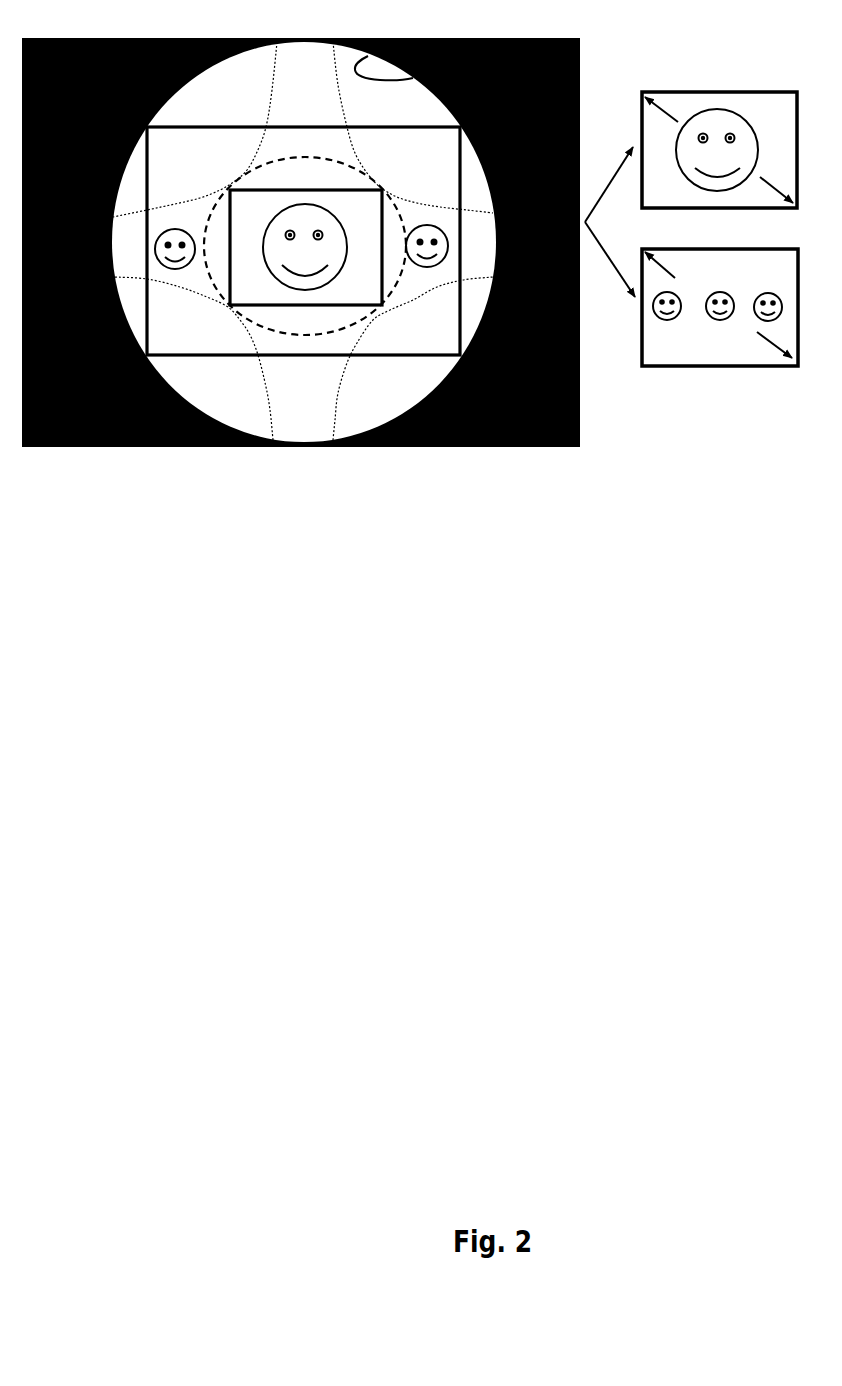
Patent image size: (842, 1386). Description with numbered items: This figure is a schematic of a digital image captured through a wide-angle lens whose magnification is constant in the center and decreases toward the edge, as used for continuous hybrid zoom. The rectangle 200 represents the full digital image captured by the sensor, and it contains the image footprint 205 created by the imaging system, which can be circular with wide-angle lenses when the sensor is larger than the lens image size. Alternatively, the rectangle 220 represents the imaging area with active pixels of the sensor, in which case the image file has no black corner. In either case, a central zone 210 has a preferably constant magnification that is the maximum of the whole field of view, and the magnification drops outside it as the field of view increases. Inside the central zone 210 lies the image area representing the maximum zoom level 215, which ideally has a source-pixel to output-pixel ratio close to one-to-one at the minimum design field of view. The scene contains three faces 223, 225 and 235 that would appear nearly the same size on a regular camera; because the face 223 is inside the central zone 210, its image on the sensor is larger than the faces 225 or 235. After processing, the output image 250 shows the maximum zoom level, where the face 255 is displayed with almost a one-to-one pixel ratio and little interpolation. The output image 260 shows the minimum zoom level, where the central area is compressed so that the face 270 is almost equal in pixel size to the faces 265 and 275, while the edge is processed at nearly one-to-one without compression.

The full digital image 200 is at (301, 230).
The image footprint 205 is at (393, 38).
The central zone 210 is at (305, 235).
The image area representing the maximum zoom level 215 is at (306, 235).
The rectangle representing the imaging area with active pixels 220 is at (303, 230).
The face 223 is at (314, 245).
The face 225 is at (175, 238).
The face 235 is at (427, 237).
The output image 250 is at (719, 138).
The face 255 is at (731, 150).
The output image 260 is at (720, 296).
The face 265 is at (669, 315).
The face 270 is at (721, 315).
The face 275 is at (769, 294).